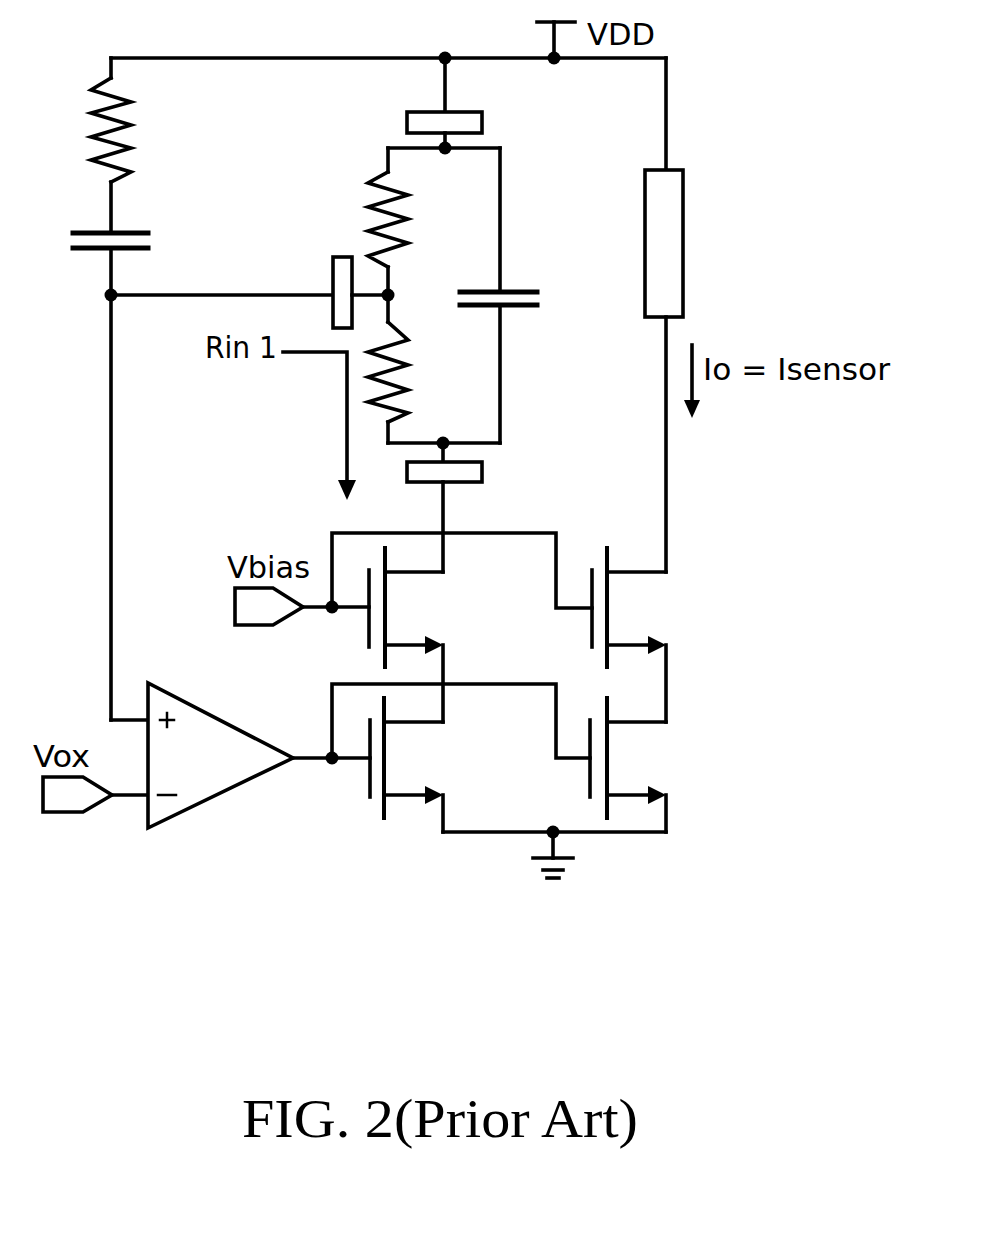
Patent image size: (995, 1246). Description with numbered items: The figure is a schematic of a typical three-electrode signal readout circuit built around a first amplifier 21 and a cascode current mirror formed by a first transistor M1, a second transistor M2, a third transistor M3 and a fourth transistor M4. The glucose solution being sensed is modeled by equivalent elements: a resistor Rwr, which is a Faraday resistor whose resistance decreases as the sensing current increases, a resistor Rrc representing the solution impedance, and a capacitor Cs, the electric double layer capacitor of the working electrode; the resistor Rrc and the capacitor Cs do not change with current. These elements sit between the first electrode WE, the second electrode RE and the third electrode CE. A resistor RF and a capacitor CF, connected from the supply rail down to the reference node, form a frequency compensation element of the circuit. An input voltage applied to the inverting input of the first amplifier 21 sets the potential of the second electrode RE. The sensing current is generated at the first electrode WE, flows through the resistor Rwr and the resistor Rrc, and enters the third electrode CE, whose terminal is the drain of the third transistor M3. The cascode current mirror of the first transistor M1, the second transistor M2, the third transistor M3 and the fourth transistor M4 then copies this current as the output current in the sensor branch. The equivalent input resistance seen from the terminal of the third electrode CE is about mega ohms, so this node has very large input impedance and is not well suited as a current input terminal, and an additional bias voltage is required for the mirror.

The first amplifier 21 is at (193, 787).
The resistor RF is at (134, 130).
The capacitor CF is at (125, 221).
The second electrode RE is at (308, 292).
The first electrode WE is at (453, 97).
The third electrode CE is at (449, 498).
The resistor Rwr is at (421, 219).
The resistor Rrc is at (418, 372).
The capacitor Cs is at (506, 278).
The first transistor M1 is at (426, 758).
The second transistor M2 is at (648, 758).
The third transistor M3 is at (427, 607).
The fourth transistor M4 is at (649, 607).